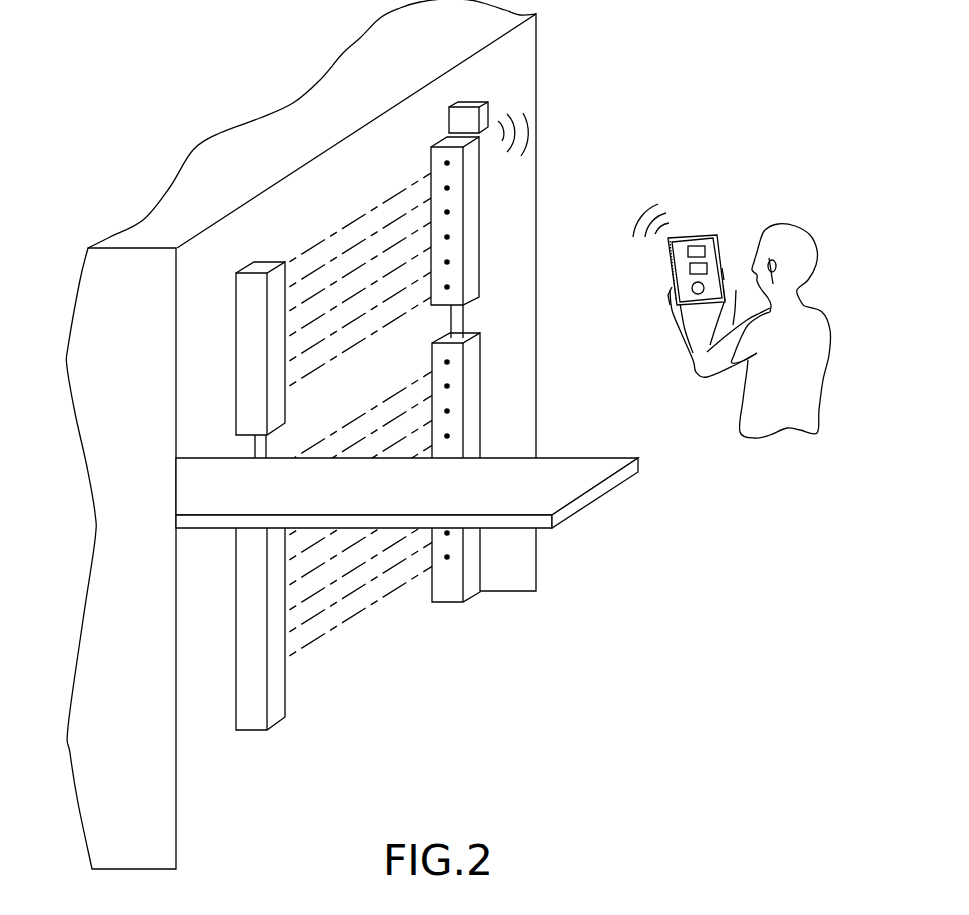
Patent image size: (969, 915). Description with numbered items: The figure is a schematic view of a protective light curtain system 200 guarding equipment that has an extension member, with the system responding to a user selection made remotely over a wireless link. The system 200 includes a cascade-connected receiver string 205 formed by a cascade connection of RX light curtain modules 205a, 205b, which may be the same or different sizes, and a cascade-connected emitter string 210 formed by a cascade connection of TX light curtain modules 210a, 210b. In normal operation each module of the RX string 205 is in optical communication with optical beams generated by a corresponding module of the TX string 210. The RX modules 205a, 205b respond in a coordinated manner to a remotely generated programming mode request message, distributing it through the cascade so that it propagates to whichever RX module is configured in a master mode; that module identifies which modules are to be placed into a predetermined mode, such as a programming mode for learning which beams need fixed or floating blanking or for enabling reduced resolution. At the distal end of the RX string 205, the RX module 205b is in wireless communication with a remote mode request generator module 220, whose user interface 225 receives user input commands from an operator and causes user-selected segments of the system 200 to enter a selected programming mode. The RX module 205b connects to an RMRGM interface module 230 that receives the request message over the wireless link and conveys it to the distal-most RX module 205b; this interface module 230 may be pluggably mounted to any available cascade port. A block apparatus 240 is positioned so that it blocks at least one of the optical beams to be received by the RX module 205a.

The protective light curtain system 200 is at (498, 630).
The cascade-connected receiver (RX) string 205 is at (519, 425).
The RX light curtain module 205a is at (480, 360).
The RX light curtain module 205b is at (479, 207).
The cascade-connected emitter (TX) string 210 is at (192, 551).
The TX light curtain module 210a is at (236, 703).
The TX light curtain module 210b is at (237, 357).
The remote mode request generator module (RMRGM) 220 is at (695, 231).
The user interface 225 is at (705, 250).
The RMRGM interface module 230 is at (490, 112).
The block apparatus 240 is at (489, 490).